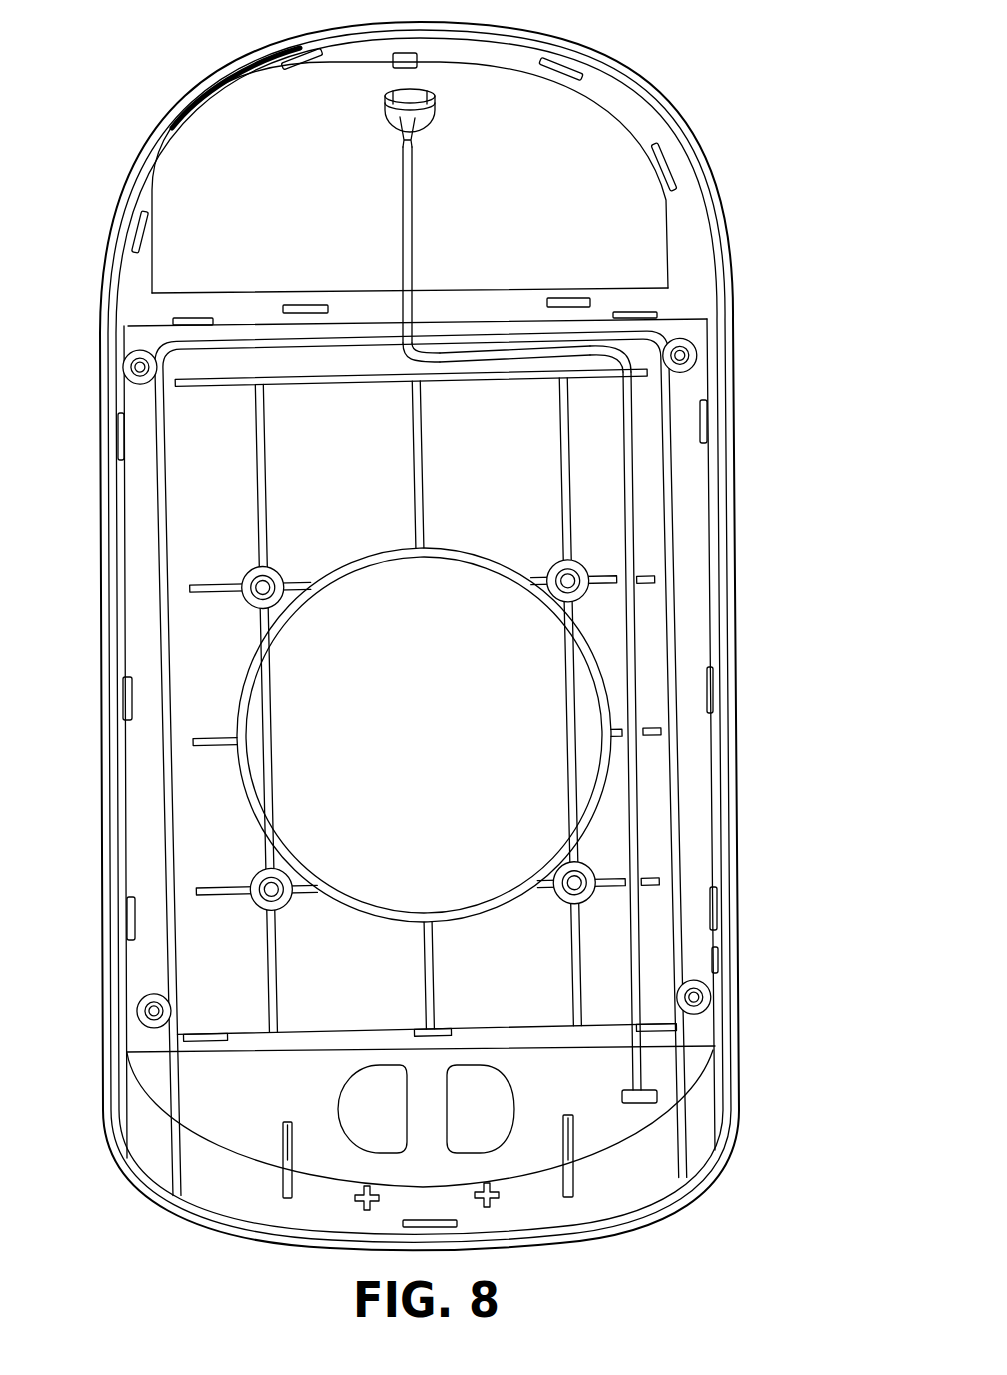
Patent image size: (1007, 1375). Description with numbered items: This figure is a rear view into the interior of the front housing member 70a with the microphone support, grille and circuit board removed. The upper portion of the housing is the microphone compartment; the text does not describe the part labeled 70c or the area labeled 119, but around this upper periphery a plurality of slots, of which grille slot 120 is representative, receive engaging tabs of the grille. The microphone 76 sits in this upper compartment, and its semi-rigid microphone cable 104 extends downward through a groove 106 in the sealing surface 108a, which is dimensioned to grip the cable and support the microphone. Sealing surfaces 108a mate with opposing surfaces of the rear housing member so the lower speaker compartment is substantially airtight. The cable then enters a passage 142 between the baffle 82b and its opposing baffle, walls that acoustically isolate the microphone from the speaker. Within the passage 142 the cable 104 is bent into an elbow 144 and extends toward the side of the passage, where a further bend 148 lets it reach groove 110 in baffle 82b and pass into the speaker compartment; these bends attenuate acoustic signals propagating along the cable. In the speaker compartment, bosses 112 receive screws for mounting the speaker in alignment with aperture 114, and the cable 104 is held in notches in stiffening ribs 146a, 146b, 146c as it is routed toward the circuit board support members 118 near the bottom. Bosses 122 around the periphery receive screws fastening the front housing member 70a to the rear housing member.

The front housing member 70a is at (666, 106).
The housing top wall 70c is at (456, 25).
The upper compartment 119 is at (266, 146).
The grille slot 120 is at (150, 229).
The microphone 76 is at (436, 103).
The microphone cable 104 is at (414, 182).
The groove 106 is at (408, 345).
The elbow 144 is at (417, 362).
The further bend 148 is at (648, 348).
The groove 110 is at (618, 378).
The passage 142 is at (348, 370).
The baffle 82b is at (308, 387).
The bosses 122 is at (126, 368).
The bosses 112 is at (272, 578).
The aperture 114 is at (467, 615).
The stiffening rib 146a is at (657, 578).
The stiffening rib 146b is at (659, 733).
The stiffening rib 146c is at (658, 880).
The sealing surfaces 108a is at (160, 550).
The circuit board support members 118 is at (283, 1142).